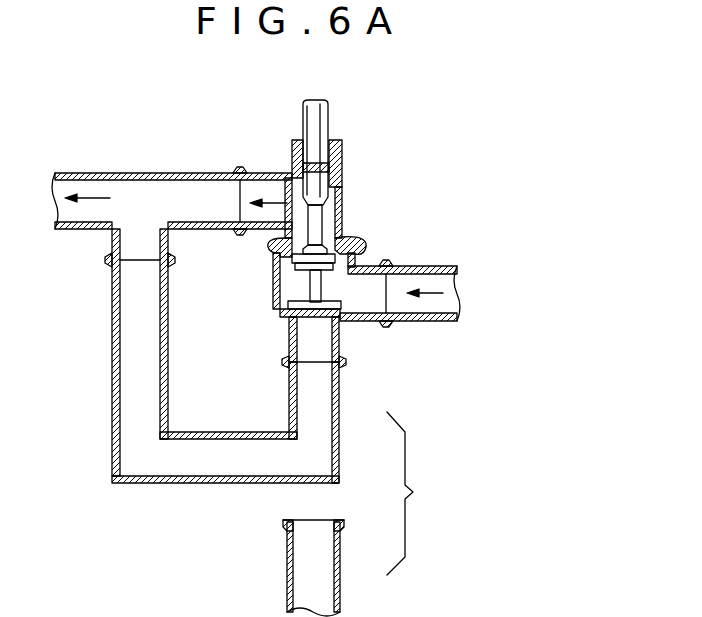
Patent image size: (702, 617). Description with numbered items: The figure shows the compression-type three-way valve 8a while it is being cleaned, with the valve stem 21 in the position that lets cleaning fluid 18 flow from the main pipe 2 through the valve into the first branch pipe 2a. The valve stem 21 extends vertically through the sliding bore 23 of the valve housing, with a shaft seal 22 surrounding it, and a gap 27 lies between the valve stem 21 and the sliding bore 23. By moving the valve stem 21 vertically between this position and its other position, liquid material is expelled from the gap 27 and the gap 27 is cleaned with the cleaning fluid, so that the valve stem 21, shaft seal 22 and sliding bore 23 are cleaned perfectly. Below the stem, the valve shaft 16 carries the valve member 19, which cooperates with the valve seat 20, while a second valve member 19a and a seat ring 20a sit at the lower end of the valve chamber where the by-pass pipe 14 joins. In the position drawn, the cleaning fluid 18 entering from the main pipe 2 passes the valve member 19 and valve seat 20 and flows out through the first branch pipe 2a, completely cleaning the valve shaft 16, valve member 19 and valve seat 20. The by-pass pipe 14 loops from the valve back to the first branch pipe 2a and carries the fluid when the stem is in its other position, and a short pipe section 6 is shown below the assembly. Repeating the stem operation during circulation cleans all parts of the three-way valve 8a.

The main pipe 2 is at (447, 321).
The first branch pipe 2a is at (108, 173).
The pipe 6 is at (340, 571).
The compression-type three-way valve 8a is at (320, 226).
The by-pass pipe 14 is at (112, 423).
The valve shaft 16 is at (310, 288).
The cleaning fluid 18 is at (449, 289).
The valve member 19 is at (285, 264).
The valve member 19a is at (286, 338).
The valve seat 20 is at (348, 240).
The seat ring 20a is at (286, 318).
The valve stem 21 is at (326, 112).
The shaft seal 22 is at (302, 168).
The sliding bore 23 is at (304, 147).
The gap 27 is at (292, 182).